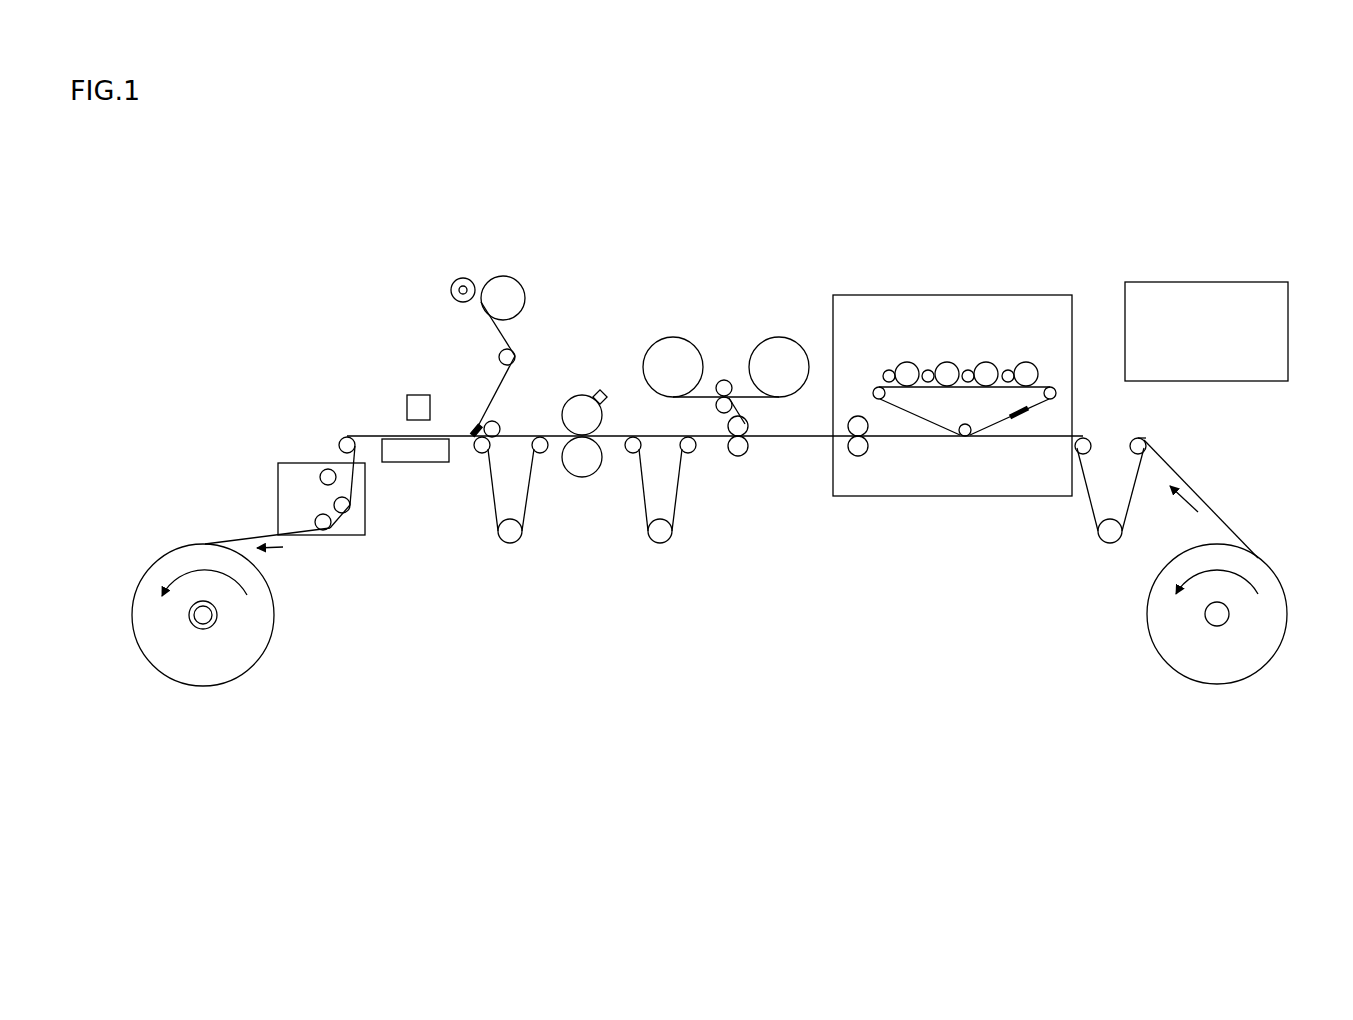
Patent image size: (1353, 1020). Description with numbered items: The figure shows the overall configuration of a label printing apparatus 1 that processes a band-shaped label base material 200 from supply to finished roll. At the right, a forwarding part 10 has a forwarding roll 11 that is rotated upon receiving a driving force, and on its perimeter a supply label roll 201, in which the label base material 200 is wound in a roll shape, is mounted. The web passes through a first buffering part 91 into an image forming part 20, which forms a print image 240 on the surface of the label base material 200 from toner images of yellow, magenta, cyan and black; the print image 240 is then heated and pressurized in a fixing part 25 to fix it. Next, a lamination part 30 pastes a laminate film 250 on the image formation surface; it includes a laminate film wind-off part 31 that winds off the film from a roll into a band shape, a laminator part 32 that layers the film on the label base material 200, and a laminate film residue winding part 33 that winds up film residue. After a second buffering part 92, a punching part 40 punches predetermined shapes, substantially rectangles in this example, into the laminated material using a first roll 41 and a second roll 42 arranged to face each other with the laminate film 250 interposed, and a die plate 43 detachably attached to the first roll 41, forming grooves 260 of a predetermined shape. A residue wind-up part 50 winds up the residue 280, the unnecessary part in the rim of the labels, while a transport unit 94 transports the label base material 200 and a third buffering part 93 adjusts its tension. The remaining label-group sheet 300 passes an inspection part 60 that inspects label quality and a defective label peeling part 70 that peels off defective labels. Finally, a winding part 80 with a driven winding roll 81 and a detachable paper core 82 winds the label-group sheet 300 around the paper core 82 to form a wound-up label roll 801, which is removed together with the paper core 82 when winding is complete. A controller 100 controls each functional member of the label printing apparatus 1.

The label printing apparatus 1 is at (266, 236).
The forwarding part 10 is at (1204, 696).
The forwarding roll 11 is at (1222, 616).
The image forming part 20 is at (923, 505).
The fixing part 25 is at (859, 459).
The lamination part 30 is at (739, 304).
The laminate film wind-off part 31 is at (668, 336).
The laminator part 32 is at (717, 412).
The laminate film residue winding part 33 is at (780, 336).
The punching part 40 is at (575, 490).
The first roll 41 is at (573, 395).
The second roll 42 is at (593, 480).
The die plate 43 is at (607, 390).
The residue wind-up part 50 is at (508, 262).
The inspection part 60 is at (419, 388).
The defective label peeling part 70 is at (300, 454).
The winding part 80 is at (194, 697).
The winding roll 81 is at (208, 618).
The paper core 82 is at (218, 605).
The first buffering part 91 is at (1100, 553).
The second buffering part 92 is at (655, 553).
The third buffering part 93 is at (505, 553).
The transport unit 94 is at (500, 425).
The controller 100 is at (1210, 282).
The label base material 200 is at (1205, 494).
The supply label roll 201 is at (1158, 658).
The print image 240 is at (1024, 415).
The laminate film 250 is at (742, 410).
The grooves 260 is at (745, 393).
The residue 280 is at (498, 392).
The label-group sheet 300 is at (247, 537).
The wound-up label roll 801 is at (158, 672).